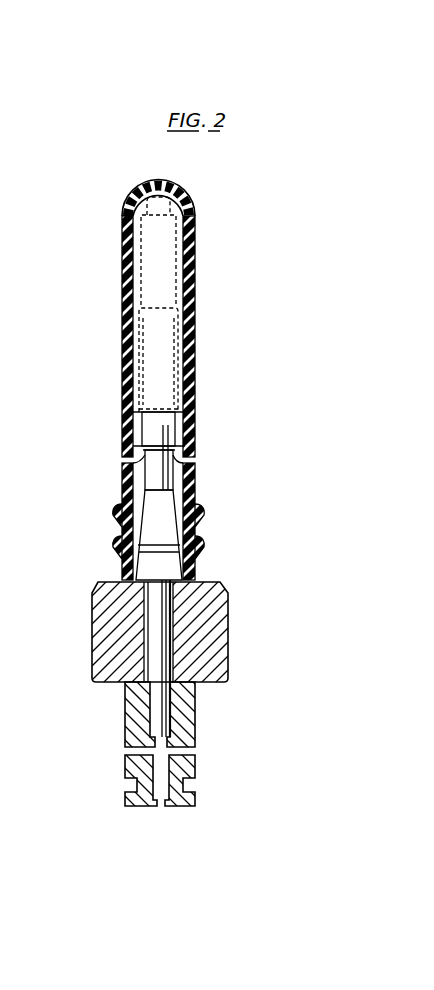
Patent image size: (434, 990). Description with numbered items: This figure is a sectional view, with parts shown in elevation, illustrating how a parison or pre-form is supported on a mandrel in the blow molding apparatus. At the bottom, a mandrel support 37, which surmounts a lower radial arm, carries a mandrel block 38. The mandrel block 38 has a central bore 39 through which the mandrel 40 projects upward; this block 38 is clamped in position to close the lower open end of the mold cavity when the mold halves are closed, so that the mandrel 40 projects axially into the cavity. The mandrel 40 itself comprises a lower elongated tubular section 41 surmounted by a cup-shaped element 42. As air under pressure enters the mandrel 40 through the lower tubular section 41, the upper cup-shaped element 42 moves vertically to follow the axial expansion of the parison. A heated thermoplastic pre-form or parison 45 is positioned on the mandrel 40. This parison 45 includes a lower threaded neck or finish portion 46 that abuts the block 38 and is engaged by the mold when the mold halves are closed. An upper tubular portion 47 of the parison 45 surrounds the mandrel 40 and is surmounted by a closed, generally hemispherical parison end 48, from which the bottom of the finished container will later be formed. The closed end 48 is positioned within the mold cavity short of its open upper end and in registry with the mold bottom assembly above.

The mandrel support 37 is at (128, 722).
The mandrel block 38 is at (95, 613).
The central bore 39 is at (147, 654).
The mandrel 40 is at (163, 392).
The lower elongated tubular section 41 is at (160, 435).
The cup-shaped element 42 is at (141, 242).
The parison 45 is at (122, 325).
The threaded neck or finish portion 46 is at (128, 553).
The upper tubular portion 47 is at (188, 325).
The closed hemispherical parison end 48 is at (138, 188).